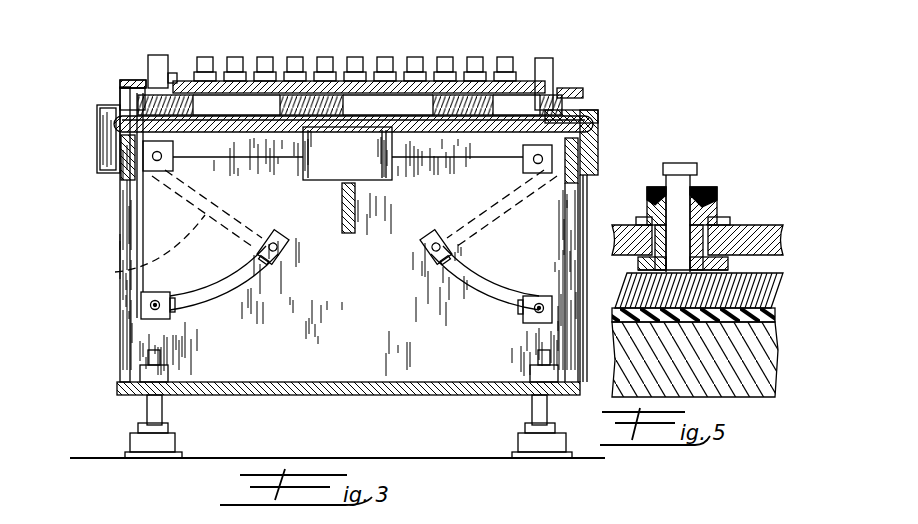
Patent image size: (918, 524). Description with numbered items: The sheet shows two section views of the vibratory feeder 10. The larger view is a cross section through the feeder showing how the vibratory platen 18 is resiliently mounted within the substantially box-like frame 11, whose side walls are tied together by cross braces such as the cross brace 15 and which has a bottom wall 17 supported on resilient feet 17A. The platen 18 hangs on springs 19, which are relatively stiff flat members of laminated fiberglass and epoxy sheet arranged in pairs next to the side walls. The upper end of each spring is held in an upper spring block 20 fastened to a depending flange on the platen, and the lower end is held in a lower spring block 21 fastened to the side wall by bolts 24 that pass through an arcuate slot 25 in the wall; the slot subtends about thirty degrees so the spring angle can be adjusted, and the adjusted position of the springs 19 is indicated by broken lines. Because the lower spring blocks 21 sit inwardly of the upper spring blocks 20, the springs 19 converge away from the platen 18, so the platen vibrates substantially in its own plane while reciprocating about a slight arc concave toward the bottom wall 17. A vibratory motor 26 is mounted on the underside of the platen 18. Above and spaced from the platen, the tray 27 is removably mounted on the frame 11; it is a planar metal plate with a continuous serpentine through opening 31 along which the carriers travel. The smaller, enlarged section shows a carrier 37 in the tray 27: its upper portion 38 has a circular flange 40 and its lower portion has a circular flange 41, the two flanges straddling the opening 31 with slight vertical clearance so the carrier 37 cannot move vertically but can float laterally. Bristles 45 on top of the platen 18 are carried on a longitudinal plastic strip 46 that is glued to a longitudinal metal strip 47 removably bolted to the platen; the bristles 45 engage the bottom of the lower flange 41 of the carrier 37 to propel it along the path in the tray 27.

In FIG. 3, the vibratory feeder 10 is at (97, 348).
In FIG. 3, the frame 11 is at (581, 334).
In FIG. 3, the cross brace 15 is at (342, 208).
In FIG. 3, the bottom wall 17 is at (367, 396).
In FIG. 3, the resilient feet 17A is at (145, 447).
In FIG. 3, the vibratory platen 18 is at (200, 126).
In FIG. 5, the vibratory platen 18 is at (780, 385).
In FIG. 3, the springs 19 is at (140, 222).
In FIG. 5, the springs 19 is at (598, 163).
In FIG. 3, the upper spring block 20 is at (522, 157).
In FIG. 3, the lower spring block 21 is at (178, 318).
In FIG. 3, the bolts 24 is at (167, 318).
In FIG. 3, the arcuate slot 25 is at (228, 290).
In FIG. 3, the vibratory motor 26 is at (352, 155).
In FIG. 3, the tray 27 is at (127, 77).
In FIG. 5, the tray 27 is at (627, 222).
In FIG. 5, the through opening 31 is at (623, 230).
In FIG. 3, the carriers 37 is at (266, 53).
In FIG. 5, the carriers 37 is at (738, 180).
In FIG. 5, the upper portion 38 is at (705, 170).
In FIG. 5, the circular flange 40 is at (728, 222).
In FIG. 5, the circular flange 41 is at (730, 265).
In FIG. 3, the bristles 45 is at (228, 106).
In FIG. 5, the bristles 45 is at (776, 295).
In FIG. 5, the plastic strip 46 is at (776, 314).
In FIG. 5, the metal strip 47 is at (776, 338).